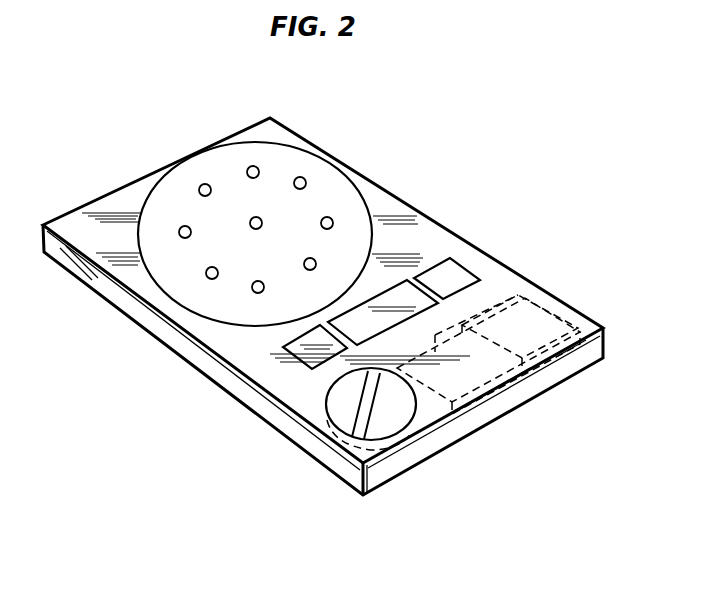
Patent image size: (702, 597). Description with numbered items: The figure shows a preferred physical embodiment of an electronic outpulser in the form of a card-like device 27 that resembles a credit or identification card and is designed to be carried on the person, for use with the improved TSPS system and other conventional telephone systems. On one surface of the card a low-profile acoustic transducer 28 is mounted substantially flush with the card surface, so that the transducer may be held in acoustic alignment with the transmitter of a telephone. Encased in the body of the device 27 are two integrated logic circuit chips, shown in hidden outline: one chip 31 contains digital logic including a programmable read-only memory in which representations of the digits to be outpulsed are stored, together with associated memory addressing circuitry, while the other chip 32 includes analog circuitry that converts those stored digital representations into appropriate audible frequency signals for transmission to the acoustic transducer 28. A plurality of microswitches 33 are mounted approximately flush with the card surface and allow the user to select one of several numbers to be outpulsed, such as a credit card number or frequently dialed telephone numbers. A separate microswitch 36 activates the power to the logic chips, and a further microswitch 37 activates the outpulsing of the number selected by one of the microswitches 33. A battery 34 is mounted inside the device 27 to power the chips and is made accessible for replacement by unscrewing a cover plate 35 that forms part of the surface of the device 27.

The card-like device 27 is at (318, 136).
The low-profile acoustic transducer 28 is at (327, 182).
The microswitches 33 is at (357, 310).
The microswitch 36 is at (449, 277).
The microswitch 37 is at (300, 347).
The integrated logic circuit chip 32 is at (443, 320).
The integrated logic circuit chip 31 is at (525, 322).
The cover plate 35 is at (338, 398).
The battery 34 is at (327, 447).